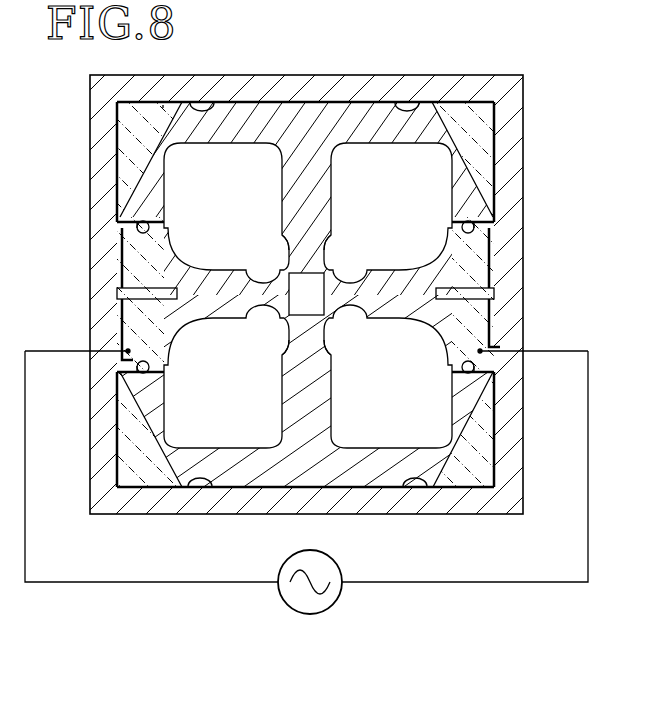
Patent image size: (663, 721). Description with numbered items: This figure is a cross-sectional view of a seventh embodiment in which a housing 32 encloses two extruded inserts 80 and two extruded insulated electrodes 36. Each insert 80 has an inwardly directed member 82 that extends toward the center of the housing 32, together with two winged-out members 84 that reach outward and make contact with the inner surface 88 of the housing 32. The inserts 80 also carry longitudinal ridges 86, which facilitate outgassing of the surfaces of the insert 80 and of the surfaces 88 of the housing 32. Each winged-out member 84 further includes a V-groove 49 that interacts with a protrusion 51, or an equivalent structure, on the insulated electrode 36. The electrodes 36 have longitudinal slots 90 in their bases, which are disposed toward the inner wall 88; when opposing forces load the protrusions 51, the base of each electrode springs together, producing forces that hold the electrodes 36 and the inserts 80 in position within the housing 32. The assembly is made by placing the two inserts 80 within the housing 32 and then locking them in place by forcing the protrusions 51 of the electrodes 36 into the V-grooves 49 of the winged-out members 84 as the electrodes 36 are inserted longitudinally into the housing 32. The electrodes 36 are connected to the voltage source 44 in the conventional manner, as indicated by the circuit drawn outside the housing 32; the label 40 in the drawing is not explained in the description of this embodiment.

The housing 32 is at (95, 127).
The electrode 36 is at (243, 320).
The electrode 40 is at (135, 220).
The voltage source 44 is at (280, 568).
The V-groove 49 is at (137, 221).
The protrusion 51 is at (147, 230).
The insert 80 is at (261, 160).
The inwardly directed member 82 is at (325, 250).
The winged-out member 84 is at (160, 139).
The longitudinal ridge 86 is at (192, 103).
The inner surface 88 is at (163, 105).
The longitudinal slot 90 is at (117, 293).